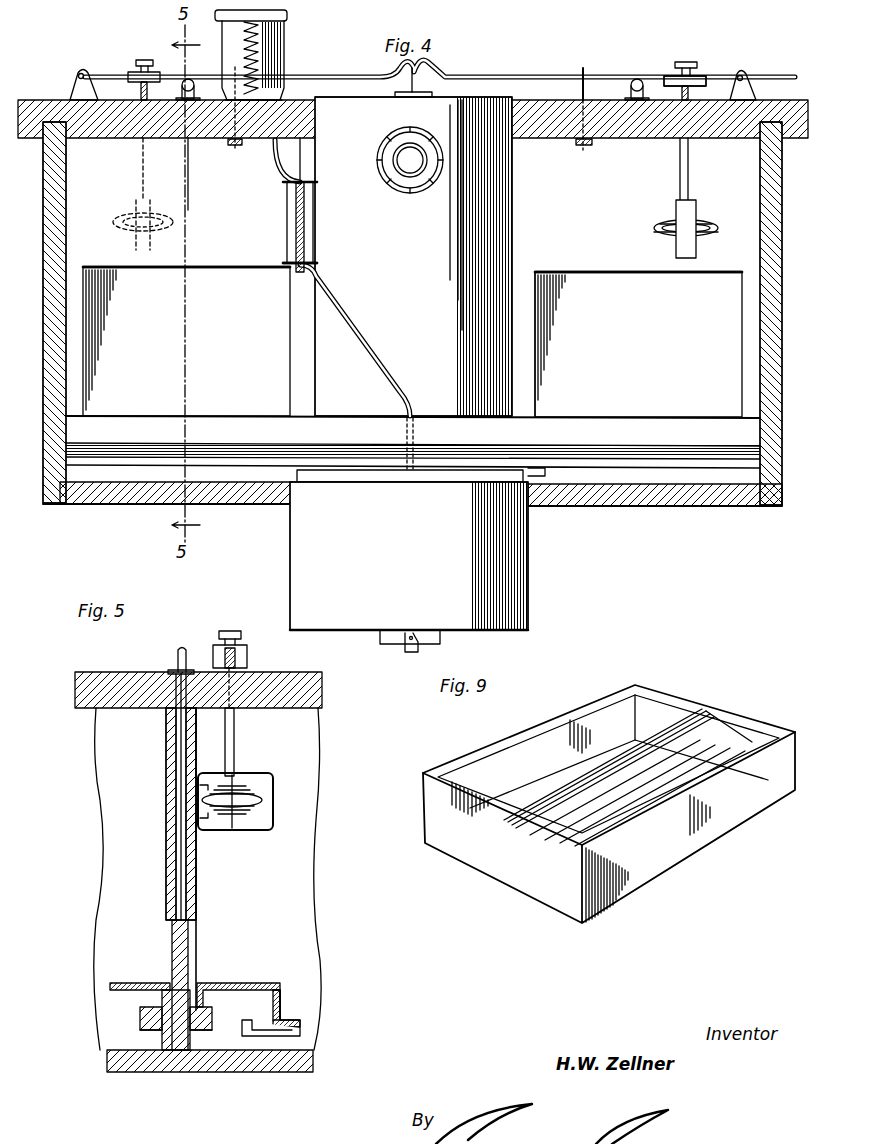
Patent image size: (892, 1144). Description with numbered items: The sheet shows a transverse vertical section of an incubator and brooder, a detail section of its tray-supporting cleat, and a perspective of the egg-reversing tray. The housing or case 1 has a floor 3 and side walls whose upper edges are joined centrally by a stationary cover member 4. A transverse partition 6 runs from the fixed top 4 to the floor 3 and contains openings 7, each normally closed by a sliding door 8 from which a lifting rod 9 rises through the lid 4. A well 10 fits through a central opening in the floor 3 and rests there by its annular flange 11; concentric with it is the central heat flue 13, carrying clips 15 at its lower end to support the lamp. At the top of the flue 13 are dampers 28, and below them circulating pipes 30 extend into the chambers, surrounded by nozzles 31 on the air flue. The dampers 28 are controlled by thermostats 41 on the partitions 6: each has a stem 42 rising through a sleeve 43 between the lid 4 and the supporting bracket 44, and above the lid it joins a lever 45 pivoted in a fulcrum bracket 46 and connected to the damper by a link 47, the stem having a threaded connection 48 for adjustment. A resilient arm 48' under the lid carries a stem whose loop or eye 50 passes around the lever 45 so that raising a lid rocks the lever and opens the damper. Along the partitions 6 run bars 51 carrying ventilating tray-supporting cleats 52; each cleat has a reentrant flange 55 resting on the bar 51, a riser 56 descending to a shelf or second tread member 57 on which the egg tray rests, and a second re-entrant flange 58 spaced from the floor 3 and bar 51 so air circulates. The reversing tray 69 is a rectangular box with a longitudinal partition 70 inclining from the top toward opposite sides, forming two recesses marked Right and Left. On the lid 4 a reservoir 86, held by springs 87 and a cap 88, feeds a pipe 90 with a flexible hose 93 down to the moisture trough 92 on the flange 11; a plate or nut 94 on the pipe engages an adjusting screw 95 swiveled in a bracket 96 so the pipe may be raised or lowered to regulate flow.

In FIG. 4, the housing or case 1 is at (44, 290).
In FIG. 4, the floor 3 is at (660, 506).
In FIG. 5, the floor 3 is at (278, 1072).
In FIG. 4, the stationary cover member 4 is at (642, 138).
In FIG. 5, the stationary cover member 4 is at (292, 676).
In FIG. 4, the transverse partition 6 is at (542, 317).
In FIG. 5, the transverse partition 6 is at (166, 800).
In FIG. 4, the openings 7 is at (216, 267).
In FIG. 5, the openings 7 is at (198, 892).
In FIG. 4, the door 8 is at (412, 342).
In FIG. 5, the door 8 is at (172, 924).
In FIG. 4, the lifting rod 9 is at (188, 142).
In FIG. 5, the lifting rod 9 is at (166, 758).
In FIG. 4, the well 10 is at (409, 556).
In FIG. 4, the annular flange 11 is at (566, 492).
In FIG. 4, the central heat flue 13 is at (390, 632).
In FIG. 4, the clips 15 is at (416, 636).
In FIG. 4, the dampers 28 is at (440, 97).
In FIG. 4, the pipes 30 is at (408, 160).
In FIG. 4, the nozzles 31 is at (425, 190).
In FIG. 4, the thermostats 41 is at (120, 218).
In FIG. 5, the thermostats 41 is at (246, 790).
In FIG. 5, the stem 42 is at (236, 775).
In FIG. 4, the sleeve 43 is at (689, 178).
In FIG. 5, the sleeve 43 is at (225, 742).
In FIG. 4, the bracket 44 is at (676, 248).
In FIG. 5, the bracket 44 is at (256, 832).
In FIG. 4, the lever 45 is at (104, 72).
In FIG. 5, the lever 45 is at (242, 642).
In FIG. 4, the fulcrum bracket 46 is at (72, 88).
In FIG. 5, the fulcrum bracket 46 is at (248, 660).
In FIG. 4, the link 47 is at (395, 86).
In FIG. 4, the threaded connection 48 is at (680, 63).
In FIG. 4, the resilient arm 48' is at (415, 124).
In FIG. 4, the loop or eye 50 is at (586, 68).
In FIG. 4, the bars 51 is at (706, 468).
In FIG. 5, the bars 51 is at (150, 1030).
In FIG. 4, the ventilating tray-supporting cleats 52 is at (636, 428).
In FIG. 5, the ventilating tray-supporting cleats 52 is at (128, 984).
In FIG. 5, the reentrant flange 55 is at (148, 998).
In FIG. 5, the riser 56 is at (282, 1002).
In FIG. 5, the shelf or second tread member 57 is at (300, 1018).
In FIG. 5, the second re-entrant flange 58 is at (262, 1036).
In FIG. 9, the reversing or rolling tray 69 is at (609, 804).
In FIG. 9, the longitudinal partition 70 is at (608, 765).
In FIG. 4, the reservoir 86 is at (284, 50).
In FIG. 4, the springs 87 is at (243, 40).
In FIG. 4, the cap 88 is at (288, 14).
In FIG. 4, the pipe 90 is at (368, 336).
In FIG. 4, the moisture trough 92 is at (455, 480).
In FIG. 4, the flexible hose 93 is at (290, 165).
In FIG. 4, the plate or nut 94 is at (302, 262).
In FIG. 4, the adjusting screw 95 is at (296, 236).
In FIG. 4, the bracket 96 is at (306, 190).